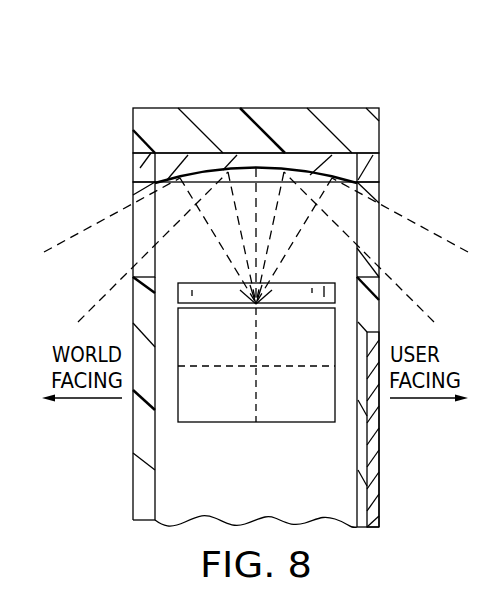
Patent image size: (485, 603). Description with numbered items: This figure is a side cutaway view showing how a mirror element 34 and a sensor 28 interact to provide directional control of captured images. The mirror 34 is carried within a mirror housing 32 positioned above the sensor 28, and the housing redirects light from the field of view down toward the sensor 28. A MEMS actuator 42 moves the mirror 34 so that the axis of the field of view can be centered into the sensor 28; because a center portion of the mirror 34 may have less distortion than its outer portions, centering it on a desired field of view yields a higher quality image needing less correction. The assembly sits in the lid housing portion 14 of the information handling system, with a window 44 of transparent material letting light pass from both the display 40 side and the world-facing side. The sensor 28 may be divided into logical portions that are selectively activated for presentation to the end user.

The mirror housing 32 is at (210, 86).
The mirror 34 is at (256, 165).
The MEMS actuator 42 is at (133, 172).
The window 44 is at (133, 245).
The lid housing portion 14 is at (136, 423).
The display 40 is at (377, 433).
The sensor 28 is at (281, 430).